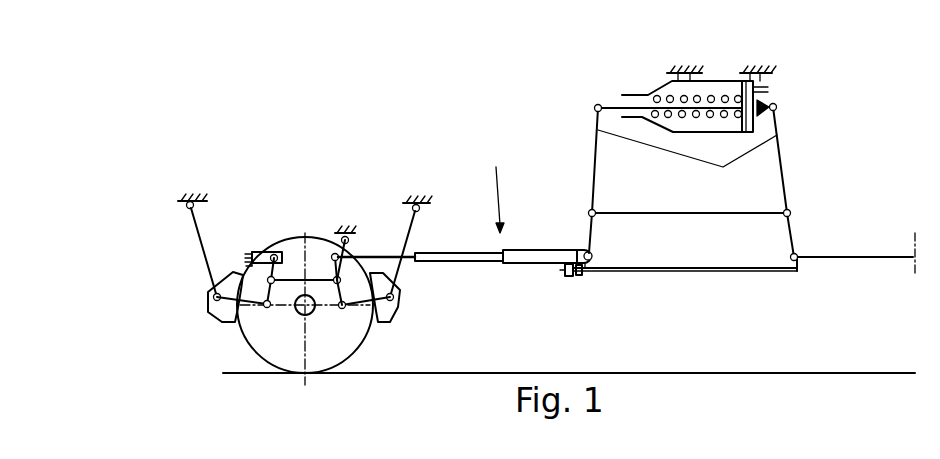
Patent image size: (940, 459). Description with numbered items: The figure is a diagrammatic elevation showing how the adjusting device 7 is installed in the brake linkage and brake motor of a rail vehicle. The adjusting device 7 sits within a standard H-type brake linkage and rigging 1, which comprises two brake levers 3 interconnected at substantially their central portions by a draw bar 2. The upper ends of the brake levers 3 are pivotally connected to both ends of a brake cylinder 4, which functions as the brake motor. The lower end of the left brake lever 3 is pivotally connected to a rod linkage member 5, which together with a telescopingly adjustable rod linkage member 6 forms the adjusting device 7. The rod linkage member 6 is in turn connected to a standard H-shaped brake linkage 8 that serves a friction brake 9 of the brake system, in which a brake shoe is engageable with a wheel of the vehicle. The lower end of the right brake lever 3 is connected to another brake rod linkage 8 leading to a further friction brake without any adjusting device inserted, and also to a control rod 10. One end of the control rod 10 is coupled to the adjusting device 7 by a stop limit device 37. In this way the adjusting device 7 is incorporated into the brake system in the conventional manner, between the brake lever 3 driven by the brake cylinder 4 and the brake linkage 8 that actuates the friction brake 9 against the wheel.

The brake linkage and rigging 1 is at (817, 160).
The draw bar 2 is at (650, 211).
The brake levers 3 is at (687, 162).
The brake cylinder 4 is at (717, 80).
The rod linkage member 5 is at (535, 250).
The telescopingly adjustable rod linkage member 6 is at (453, 253).
The adjusting device 7 is at (496, 189).
The brake linkage 8 is at (372, 256).
The friction brake 9 is at (235, 327).
The control rod 10 is at (688, 272).
The stop limit device 37 is at (573, 278).